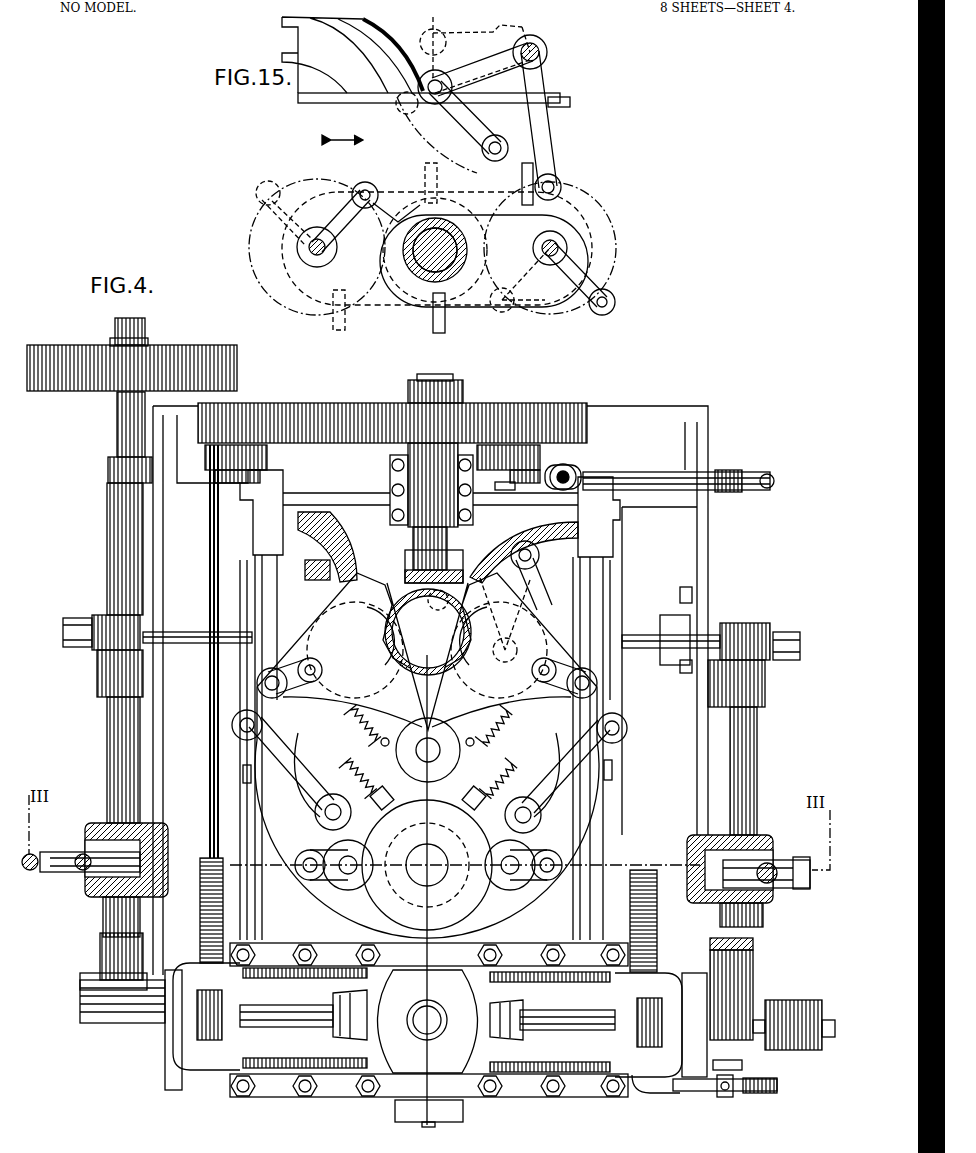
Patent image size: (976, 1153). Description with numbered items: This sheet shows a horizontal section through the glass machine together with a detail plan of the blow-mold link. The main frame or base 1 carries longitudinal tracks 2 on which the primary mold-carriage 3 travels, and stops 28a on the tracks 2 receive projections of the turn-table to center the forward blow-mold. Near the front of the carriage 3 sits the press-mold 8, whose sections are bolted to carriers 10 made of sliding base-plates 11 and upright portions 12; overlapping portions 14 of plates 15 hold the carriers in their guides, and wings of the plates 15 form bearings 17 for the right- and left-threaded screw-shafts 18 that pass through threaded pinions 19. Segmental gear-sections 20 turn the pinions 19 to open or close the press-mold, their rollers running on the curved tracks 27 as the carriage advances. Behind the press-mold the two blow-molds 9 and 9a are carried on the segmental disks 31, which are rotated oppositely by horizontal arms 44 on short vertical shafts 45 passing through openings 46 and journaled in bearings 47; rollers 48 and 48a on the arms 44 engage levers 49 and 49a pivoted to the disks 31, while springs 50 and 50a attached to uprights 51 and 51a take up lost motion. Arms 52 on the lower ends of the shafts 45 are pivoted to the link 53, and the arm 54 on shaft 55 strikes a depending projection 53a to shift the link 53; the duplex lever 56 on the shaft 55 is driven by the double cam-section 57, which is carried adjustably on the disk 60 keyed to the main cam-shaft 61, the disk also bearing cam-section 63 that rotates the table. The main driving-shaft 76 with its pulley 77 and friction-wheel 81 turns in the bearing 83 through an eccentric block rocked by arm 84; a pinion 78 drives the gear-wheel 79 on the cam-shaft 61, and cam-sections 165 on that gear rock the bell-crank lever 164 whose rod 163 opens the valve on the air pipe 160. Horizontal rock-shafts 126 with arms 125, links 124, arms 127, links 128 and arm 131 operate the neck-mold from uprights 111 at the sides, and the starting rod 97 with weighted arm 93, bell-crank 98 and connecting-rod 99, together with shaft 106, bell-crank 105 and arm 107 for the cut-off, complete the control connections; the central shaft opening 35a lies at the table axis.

In FIG. 15, the cam-section 57 is at (386, 53).
In FIG. 4, the cam-section 57 is at (565, 543).
In FIG. 15, the vertical shaft 55 is at (548, 52).
In FIG. 4, the vertical shaft 55 is at (521, 543).
In FIG. 15, the lever 56 is at (505, 118).
In FIG. 4, the lever 56 is at (425, 572).
In FIG. 15, the arm 54 is at (546, 133).
In FIG. 4, the arm 54 is at (540, 605).
In FIG. 15, the disk 60 is at (345, 103).
In FIG. 4, the disk 60 is at (322, 563).
In FIG. 15, the depending projections 53a is at (445, 331).
In FIG. 15, the link 53 is at (567, 215).
In FIG. 15, the short vertical shafts 45 is at (310, 250).
In FIG. 4, the short vertical shafts 45 is at (429, 775).
In FIG. 15, the bearings 47 is at (312, 257).
In FIG. 15, the arms or levers 52 is at (616, 288).
In FIG. 4, the driving-pulley 77 is at (172, 353).
In FIG. 4, the pinion 78 is at (250, 412).
In FIG. 4, the gear-wheel 79 is at (362, 413).
In FIG. 4, the main driving-shaft 76 is at (120, 428).
In FIG. 4, the cam-sections 165 is at (364, 450).
In FIG. 4, the bell-crank lever 164 is at (517, 483).
In FIG. 4, the rod 163 is at (580, 468).
In FIG. 4, the pipe 160 is at (645, 477).
In FIG. 4, the main frame or base 1 is at (430, 690).
In FIG. 4, the longitudinal tracks or ways 2 is at (430, 513).
In FIG. 4, the primary mold support or carriage 3 is at (604, 593).
In FIG. 4, the cam-section 63 is at (333, 527).
In FIG. 4, the main cam-shaft 61 is at (447, 540).
In FIG. 4, the shaft hole 35a is at (428, 632).
In FIG. 4, the segmental disks 31 is at (427, 755).
In FIG. 4, the blow-mold 9a is at (423, 657).
In FIG. 4, the spiral spring 50a is at (428, 737).
In FIG. 4, the spiral spring 50 is at (428, 778).
In FIG. 4, the upright 51a is at (431, 732).
In FIG. 4, the upright 51 is at (395, 800).
In FIG. 4, the horizontal arms 44 is at (427, 703).
In FIG. 4, the arm or lever 49a is at (625, 704).
In FIG. 4, the horizontal roller 48a is at (232, 724).
In FIG. 4, the slots or openings 46 is at (303, 783).
In FIG. 4, the horizontal roller 48 is at (338, 806).
In FIG. 4, the arm or lever 49 is at (428, 865).
In FIG. 4, the blow-mold 9 is at (427, 890).
In FIG. 4, the stops 28a is at (243, 773).
In FIG. 4, the segmental gear-sections 20 is at (205, 860).
In FIG. 4, the arms 127 is at (100, 620).
In FIG. 4, the links 128 is at (175, 637).
In FIG. 4, the arm 131 is at (633, 633).
In FIG. 4, the horizontal rock-shafts 126 is at (112, 731).
In FIG. 4, the links 124 is at (88, 846).
In FIG. 4, the arms 125 is at (55, 874).
In FIG. 4, the uprights 111 is at (108, 896).
In FIG. 4, the downwardly-projecting arm 84 is at (100, 938).
In FIG. 4, the bearing 83 is at (80, 976).
In FIG. 4, the friction-wheel 81 is at (127, 1010).
In FIG. 4, the tracks 27 is at (167, 1064).
In FIG. 4, the bearings 17 is at (427, 1020).
In FIG. 4, the pinions 19 is at (210, 1000).
In FIG. 4, the plates 15 is at (429, 1021).
In FIG. 4, the overlapping portions 14 is at (278, 976).
In FIG. 4, the carriers 10 is at (427, 1032).
In FIG. 4, the screw-shafts 18 is at (297, 996).
In FIG. 4, the sliding base-plates 11 is at (431, 997).
In FIG. 4, the upright portions 12 is at (345, 1040).
In FIG. 4, the press-mold 8 is at (428, 1021).
In FIG. 4, the weighted arm 93 is at (440, 1122).
In FIG. 4, the rod 97 is at (660, 1094).
In FIG. 4, the weighted bell-crank lever 98 is at (700, 1094).
In FIG. 4, the connecting-rod 99 is at (725, 1098).
In FIG. 4, the short shaft 106 is at (760, 1094).
In FIG. 4, the weighted bell-crank lever 105 is at (750, 1058).
In FIG. 4, the upwardly-projecting arm 107 is at (755, 951).